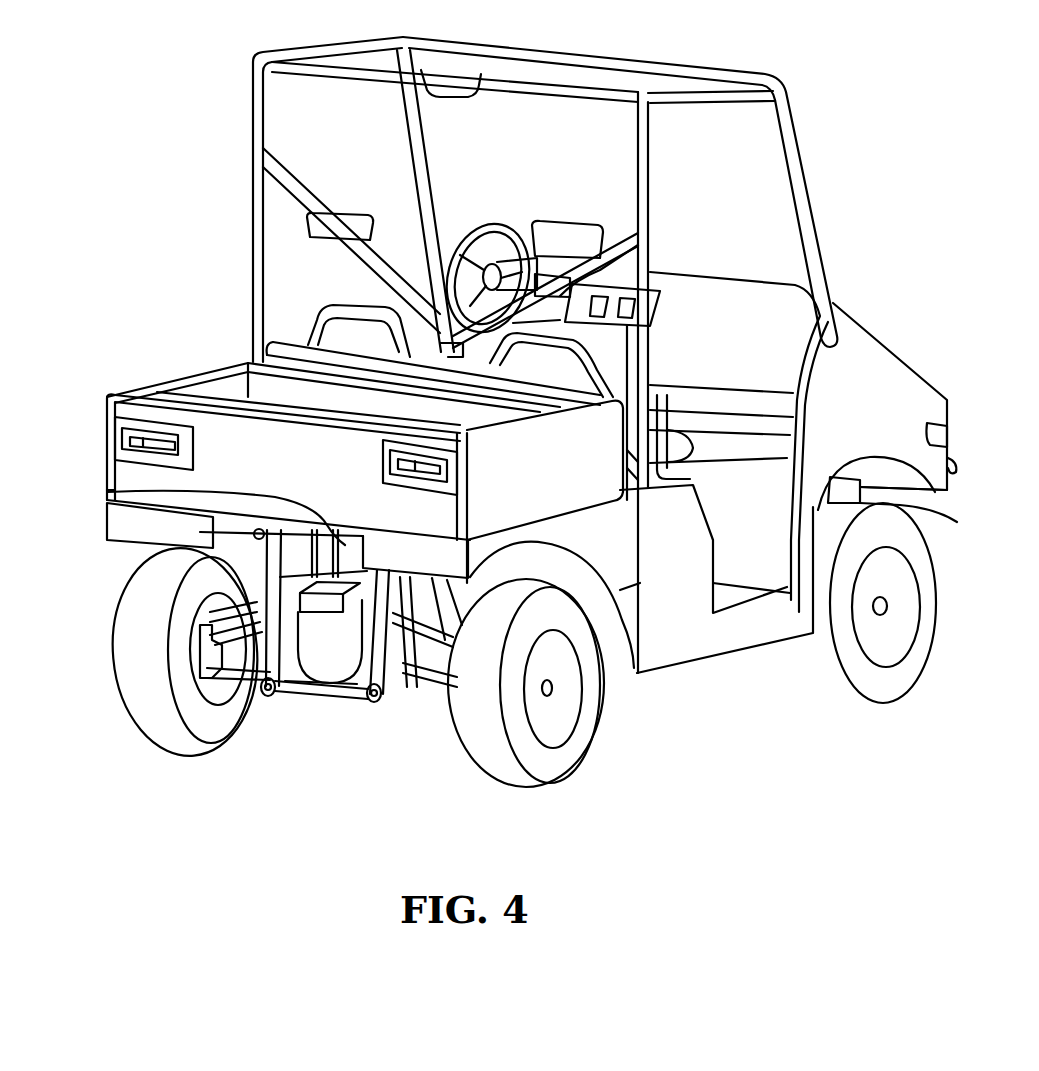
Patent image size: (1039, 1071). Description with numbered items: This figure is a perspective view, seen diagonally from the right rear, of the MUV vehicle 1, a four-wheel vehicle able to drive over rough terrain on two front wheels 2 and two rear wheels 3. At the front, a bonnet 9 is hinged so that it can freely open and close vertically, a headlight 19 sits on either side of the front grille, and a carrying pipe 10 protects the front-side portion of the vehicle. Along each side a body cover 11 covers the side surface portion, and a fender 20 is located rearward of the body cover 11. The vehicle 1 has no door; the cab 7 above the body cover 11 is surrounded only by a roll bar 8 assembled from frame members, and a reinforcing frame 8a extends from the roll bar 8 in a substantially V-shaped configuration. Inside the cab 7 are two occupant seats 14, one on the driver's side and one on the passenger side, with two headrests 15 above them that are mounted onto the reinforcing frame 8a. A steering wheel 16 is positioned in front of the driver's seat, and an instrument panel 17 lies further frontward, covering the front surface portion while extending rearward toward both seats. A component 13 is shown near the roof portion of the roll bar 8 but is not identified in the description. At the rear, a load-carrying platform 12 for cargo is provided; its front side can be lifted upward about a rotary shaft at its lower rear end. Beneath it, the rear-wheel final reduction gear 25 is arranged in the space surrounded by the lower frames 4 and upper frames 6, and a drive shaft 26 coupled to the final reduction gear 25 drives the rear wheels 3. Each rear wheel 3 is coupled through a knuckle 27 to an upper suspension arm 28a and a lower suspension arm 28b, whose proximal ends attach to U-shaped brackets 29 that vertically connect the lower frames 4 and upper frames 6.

The MUV vehicle 1 is at (931, 126).
The front wheel 2 is at (850, 698).
The rear wheel 3 is at (178, 755).
The lower frame 4 is at (268, 700).
The upper frame 6 is at (175, 548).
The cab 7 is at (728, 195).
The roll bar 8 is at (797, 150).
The reinforcing frame 8a is at (293, 184).
The bonnet 9 is at (895, 356).
The carrying pipe 10 is at (870, 490).
The body cover 11 is at (707, 640).
The load-carrying platform 12 is at (200, 386).
The rear-view mirror bracket 13 is at (478, 96).
The occupant seat 14 is at (312, 310).
The headrest 15 is at (345, 210).
The steering wheel 16 is at (470, 228).
The instrument panel 17 is at (588, 277).
The headlight 19 is at (947, 440).
The fender 20 is at (630, 570).
The rear-wheel final reduction gear 25 is at (322, 668).
The drive shaft 26 is at (233, 647).
The knuckle 27 is at (205, 650).
The upper suspension arm 28a is at (200, 605).
The lower suspension arm 28b is at (215, 680).
The U-shaped bracket 29 is at (108, 491).